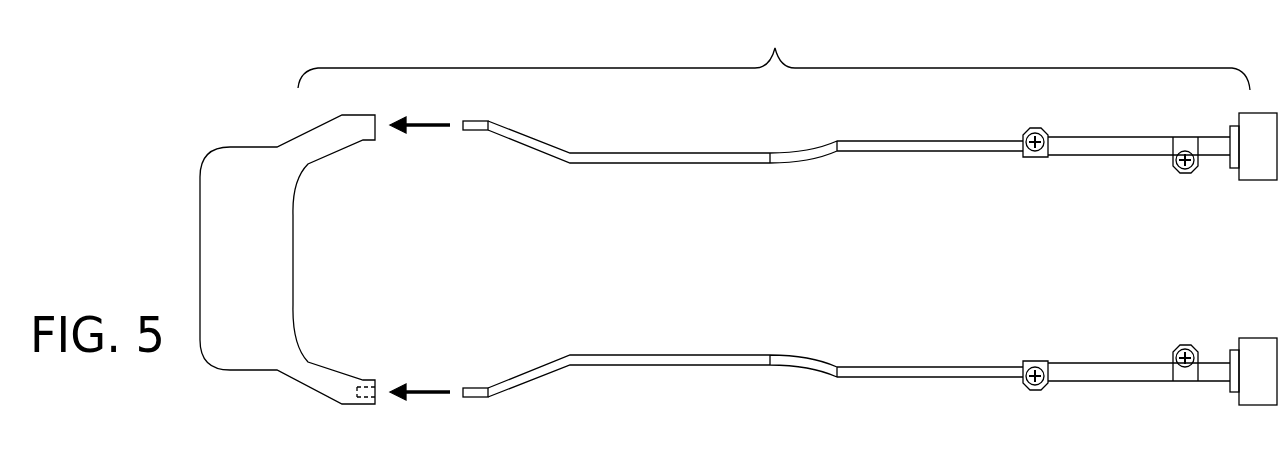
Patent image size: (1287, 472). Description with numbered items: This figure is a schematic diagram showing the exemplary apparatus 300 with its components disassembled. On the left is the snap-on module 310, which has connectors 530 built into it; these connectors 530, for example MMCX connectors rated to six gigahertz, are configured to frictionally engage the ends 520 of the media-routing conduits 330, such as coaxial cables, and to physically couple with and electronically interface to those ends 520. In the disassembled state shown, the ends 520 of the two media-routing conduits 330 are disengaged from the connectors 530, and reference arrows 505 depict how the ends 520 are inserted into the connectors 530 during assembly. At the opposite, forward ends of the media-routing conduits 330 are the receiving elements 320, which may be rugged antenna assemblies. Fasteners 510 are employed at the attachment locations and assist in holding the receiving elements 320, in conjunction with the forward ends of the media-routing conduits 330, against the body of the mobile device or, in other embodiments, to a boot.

The apparatus 300 is at (774, 56).
The snap-on module 310 is at (240, 142).
The receiving elements 320 is at (1228, 192).
The media-routing conduits 330 is at (685, 172).
The reference arrows 505 is at (424, 128).
The fasteners 510 is at (1034, 346).
The ends 520 is at (468, 408).
The connectors 530 is at (347, 383).